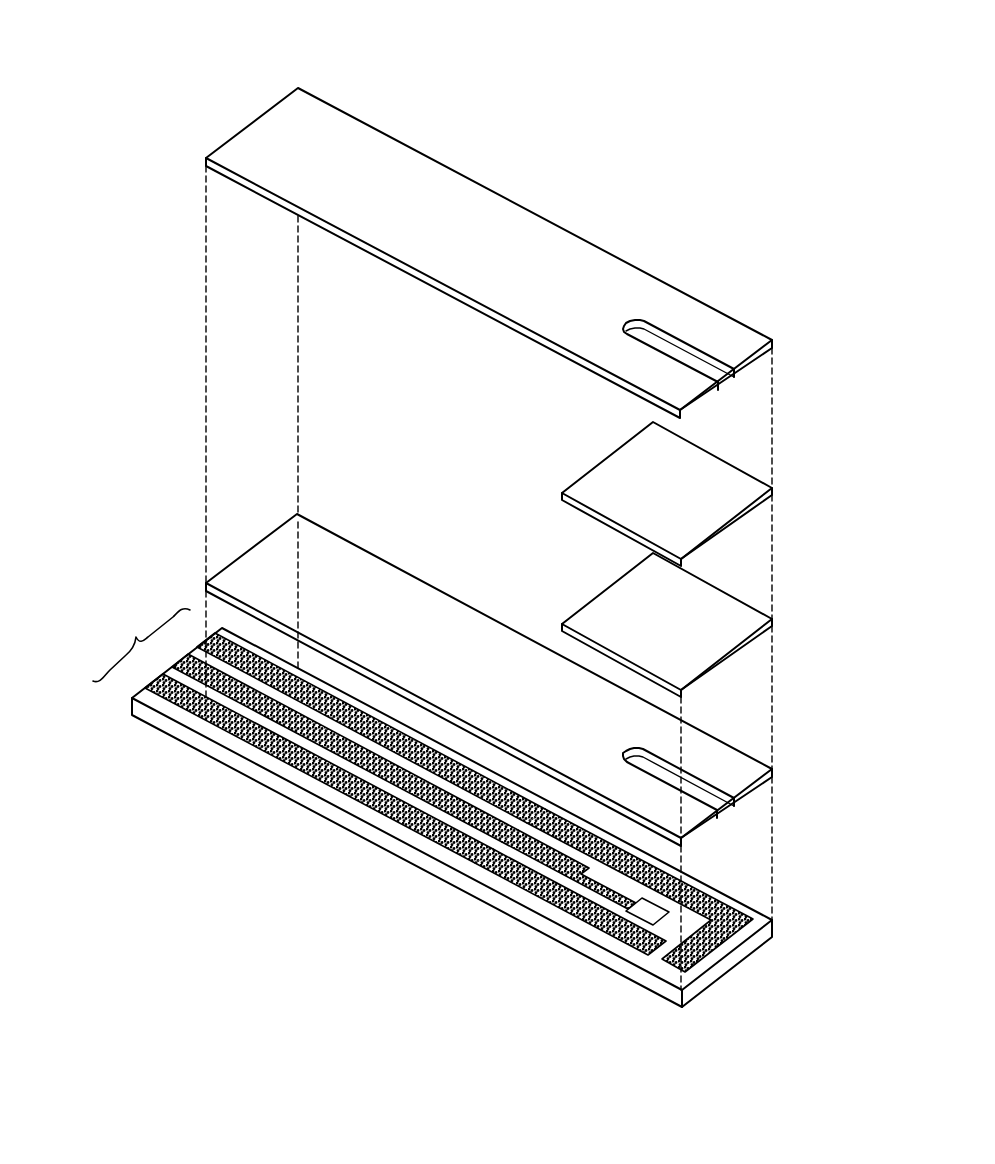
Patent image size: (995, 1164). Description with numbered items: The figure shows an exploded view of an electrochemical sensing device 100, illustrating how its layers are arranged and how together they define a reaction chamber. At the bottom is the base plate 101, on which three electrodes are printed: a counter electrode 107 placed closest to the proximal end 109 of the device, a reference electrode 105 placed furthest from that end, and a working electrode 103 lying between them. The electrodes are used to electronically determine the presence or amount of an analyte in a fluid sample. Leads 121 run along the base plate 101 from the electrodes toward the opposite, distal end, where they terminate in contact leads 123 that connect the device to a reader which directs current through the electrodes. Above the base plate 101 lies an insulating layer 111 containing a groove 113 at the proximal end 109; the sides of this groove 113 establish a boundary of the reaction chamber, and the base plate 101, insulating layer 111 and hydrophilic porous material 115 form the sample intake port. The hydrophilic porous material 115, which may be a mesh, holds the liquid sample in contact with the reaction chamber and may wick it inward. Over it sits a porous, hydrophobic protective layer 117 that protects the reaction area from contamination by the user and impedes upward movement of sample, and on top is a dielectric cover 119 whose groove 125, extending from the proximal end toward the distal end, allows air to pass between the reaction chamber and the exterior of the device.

The test strip 100 is at (121, 47).
The base plate 101 is at (535, 921).
The working electrode 103 is at (668, 937).
The reference electrode 105 is at (620, 905).
The counter electrode 107 is at (698, 957).
The proximal end 109 is at (746, 972).
The insulating layer 111 is at (320, 548).
The groove 113 is at (710, 797).
The hydrophilic porous material 115 is at (742, 620).
The protective layer 117 is at (742, 490).
The cover 119 is at (267, 132).
The leads 121 is at (305, 698).
The contact leads 123 is at (141, 645).
The groove 125 is at (710, 371).